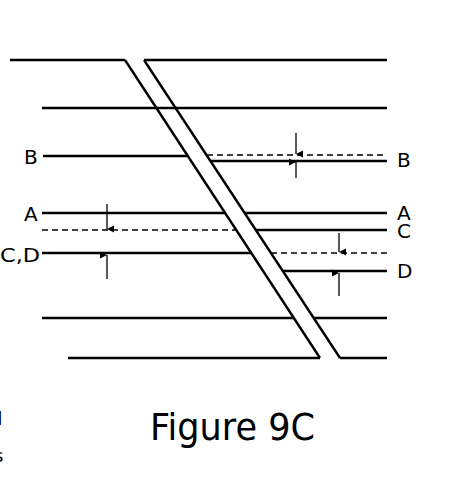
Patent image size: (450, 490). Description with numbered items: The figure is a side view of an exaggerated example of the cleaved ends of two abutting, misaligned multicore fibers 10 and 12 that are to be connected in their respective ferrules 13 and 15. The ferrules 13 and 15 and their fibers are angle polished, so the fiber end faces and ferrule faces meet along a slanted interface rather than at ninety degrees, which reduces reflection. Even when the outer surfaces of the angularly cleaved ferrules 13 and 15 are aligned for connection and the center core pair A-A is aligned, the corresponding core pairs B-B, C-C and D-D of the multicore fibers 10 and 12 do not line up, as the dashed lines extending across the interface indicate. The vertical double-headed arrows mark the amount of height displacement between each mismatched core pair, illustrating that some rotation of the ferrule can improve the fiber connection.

The multicore fiber 10 is at (103, 108).
The multicore fiber 12 is at (308, 108).
The ferrule 13 is at (63, 60).
The ferrule 15 is at (197, 60).